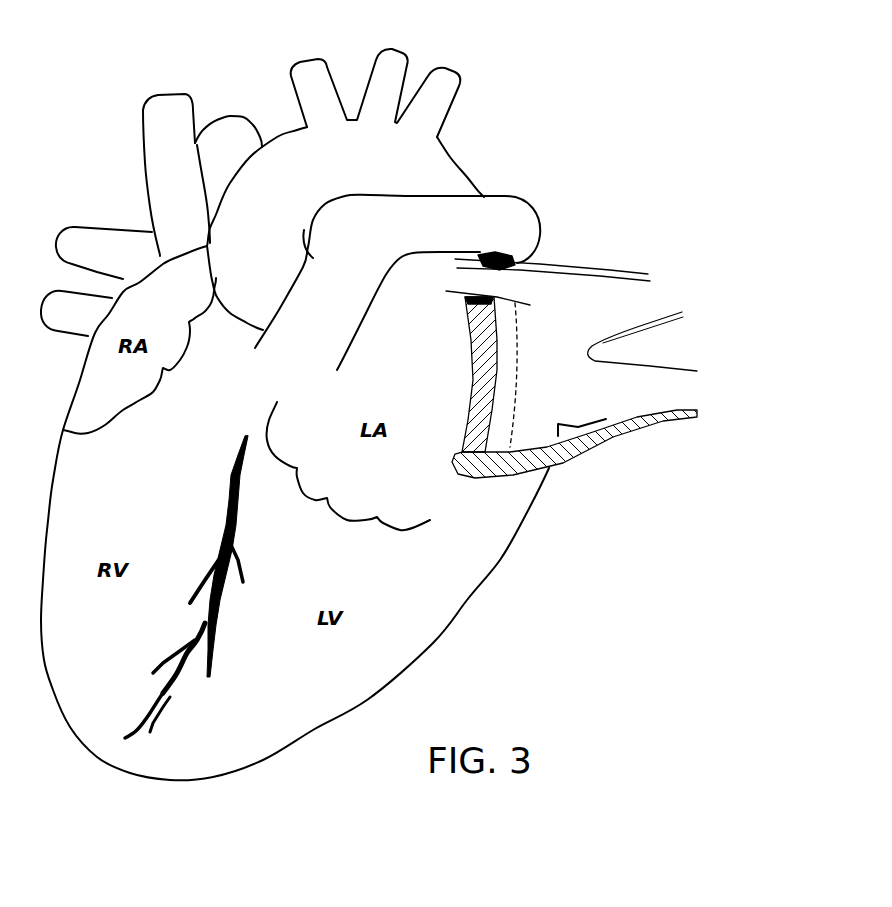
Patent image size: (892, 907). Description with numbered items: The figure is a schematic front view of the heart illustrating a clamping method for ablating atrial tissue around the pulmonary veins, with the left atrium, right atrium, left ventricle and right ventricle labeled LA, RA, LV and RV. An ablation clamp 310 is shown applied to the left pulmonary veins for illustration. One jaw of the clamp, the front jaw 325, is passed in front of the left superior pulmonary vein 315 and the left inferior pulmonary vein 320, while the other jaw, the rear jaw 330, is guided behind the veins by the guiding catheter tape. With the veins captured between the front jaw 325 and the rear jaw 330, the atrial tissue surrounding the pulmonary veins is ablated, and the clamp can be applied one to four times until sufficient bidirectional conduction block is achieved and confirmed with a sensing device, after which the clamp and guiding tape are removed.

The ablation clamp 310 is at (584, 473).
The left superior pulmonary vein 315 is at (647, 277).
The left inferior pulmonary vein 320 is at (678, 377).
The front jaw 325 is at (461, 340).
The rear jaw 330 is at (522, 334).